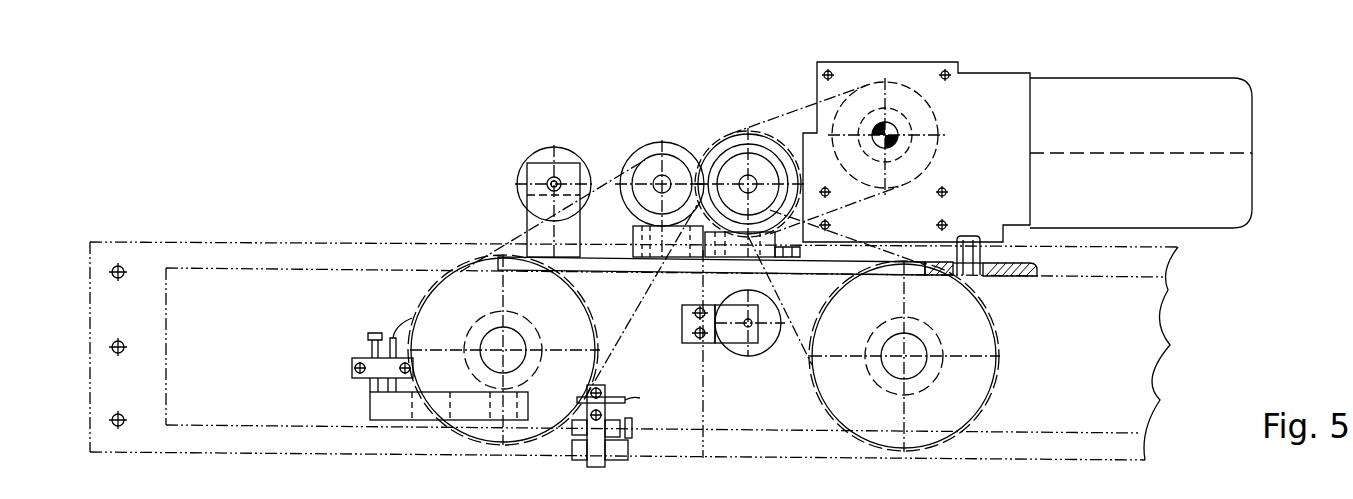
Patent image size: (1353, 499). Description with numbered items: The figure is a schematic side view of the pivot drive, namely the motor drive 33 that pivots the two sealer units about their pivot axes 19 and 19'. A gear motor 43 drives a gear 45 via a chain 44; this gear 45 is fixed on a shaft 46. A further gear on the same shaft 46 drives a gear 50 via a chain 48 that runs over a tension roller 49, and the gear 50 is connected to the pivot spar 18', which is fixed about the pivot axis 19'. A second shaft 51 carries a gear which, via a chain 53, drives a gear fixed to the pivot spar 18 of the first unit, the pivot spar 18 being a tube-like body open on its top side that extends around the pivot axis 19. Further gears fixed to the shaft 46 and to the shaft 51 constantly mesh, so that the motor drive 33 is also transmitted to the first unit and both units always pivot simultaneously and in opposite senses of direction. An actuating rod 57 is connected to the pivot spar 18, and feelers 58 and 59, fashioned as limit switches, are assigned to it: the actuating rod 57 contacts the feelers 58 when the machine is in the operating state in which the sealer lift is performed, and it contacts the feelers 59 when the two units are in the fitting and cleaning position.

The motor drive 33 is at (407, 112).
The pivot axis 19 is at (443, 299).
The pivot spar 18 is at (436, 402).
The actuating rod 57 is at (432, 413).
The feeler 58 is at (363, 383).
The feeler 59 is at (570, 428).
The chain 53 is at (515, 240).
The shaft 51 is at (662, 183).
The shaft 46 is at (725, 163).
The gear 45 is at (747, 183).
The chain 44 is at (798, 108).
The gear motor 43 is at (977, 113).
The tension roller 49 is at (765, 347).
The chain 48 is at (803, 353).
The gear 50 is at (960, 405).
The pivot axis 19' is at (978, 416).
The pivot spar 18' is at (1002, 408).